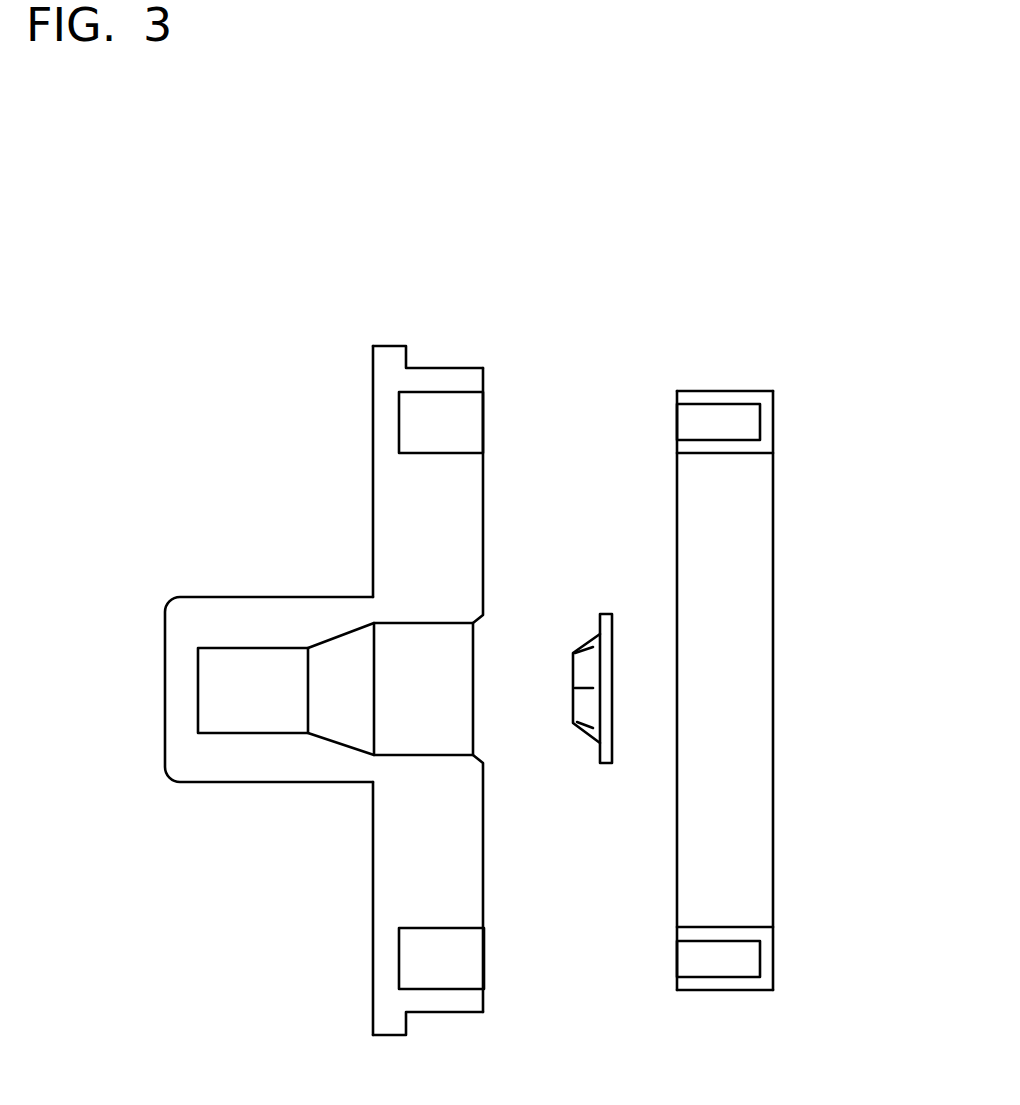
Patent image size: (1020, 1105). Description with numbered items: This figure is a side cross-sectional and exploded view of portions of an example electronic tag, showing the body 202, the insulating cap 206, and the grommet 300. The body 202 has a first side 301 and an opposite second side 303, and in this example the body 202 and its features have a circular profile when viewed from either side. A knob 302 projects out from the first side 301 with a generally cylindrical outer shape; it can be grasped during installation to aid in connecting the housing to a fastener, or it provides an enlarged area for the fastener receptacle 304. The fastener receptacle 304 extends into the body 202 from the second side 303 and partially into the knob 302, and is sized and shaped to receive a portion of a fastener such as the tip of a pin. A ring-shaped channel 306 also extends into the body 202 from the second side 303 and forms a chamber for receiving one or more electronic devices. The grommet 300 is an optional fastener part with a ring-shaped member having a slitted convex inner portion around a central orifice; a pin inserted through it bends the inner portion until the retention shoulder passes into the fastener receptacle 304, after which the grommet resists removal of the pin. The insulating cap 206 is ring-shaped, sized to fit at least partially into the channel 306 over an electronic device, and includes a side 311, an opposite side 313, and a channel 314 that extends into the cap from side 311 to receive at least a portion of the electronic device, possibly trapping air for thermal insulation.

The body 202 is at (296, 326).
The insulating cap 206 is at (744, 331).
The grommet 300 is at (606, 617).
The first side 301 is at (372, 472).
The knob 302 is at (223, 783).
The second side 303 is at (485, 493).
The fastener receptacle 304 is at (335, 734).
The channel 306 is at (442, 392).
The side 311 is at (678, 822).
The side 313 is at (772, 688).
The channel 314 is at (690, 416).